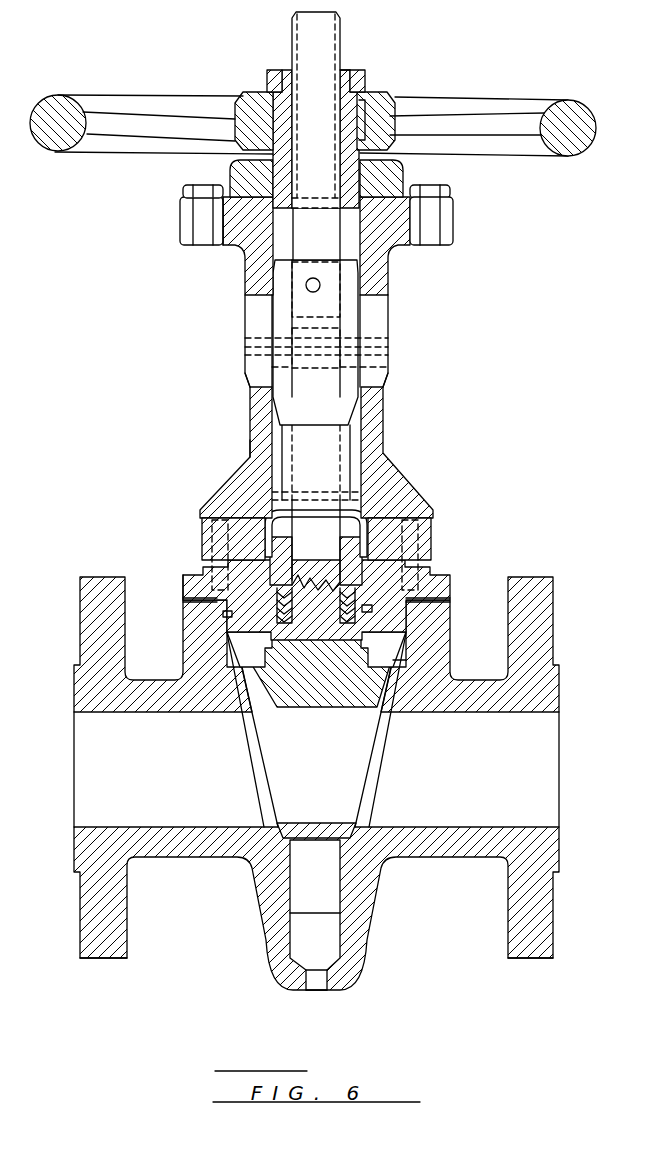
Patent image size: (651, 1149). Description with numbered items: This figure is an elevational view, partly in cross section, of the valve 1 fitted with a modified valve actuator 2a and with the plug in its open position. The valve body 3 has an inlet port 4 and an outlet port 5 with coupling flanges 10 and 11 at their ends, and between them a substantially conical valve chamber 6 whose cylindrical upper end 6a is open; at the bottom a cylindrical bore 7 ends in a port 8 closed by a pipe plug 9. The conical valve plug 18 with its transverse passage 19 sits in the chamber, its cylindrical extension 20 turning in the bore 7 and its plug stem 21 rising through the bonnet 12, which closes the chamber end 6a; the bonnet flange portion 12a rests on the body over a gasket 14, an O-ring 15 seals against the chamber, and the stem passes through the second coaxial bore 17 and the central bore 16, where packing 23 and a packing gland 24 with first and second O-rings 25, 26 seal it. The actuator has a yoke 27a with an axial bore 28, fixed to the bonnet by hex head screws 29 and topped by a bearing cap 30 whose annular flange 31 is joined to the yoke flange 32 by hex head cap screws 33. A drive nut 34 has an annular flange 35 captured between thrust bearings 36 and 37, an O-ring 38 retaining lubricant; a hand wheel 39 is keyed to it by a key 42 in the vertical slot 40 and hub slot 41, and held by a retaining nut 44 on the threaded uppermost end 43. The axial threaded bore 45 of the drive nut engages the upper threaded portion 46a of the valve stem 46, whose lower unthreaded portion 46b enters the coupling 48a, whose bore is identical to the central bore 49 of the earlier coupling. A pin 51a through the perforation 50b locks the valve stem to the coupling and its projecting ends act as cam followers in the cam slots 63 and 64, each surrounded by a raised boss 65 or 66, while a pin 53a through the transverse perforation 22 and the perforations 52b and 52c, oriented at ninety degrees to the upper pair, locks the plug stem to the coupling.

The valve 1 is at (563, 614).
The valve actuator 2a is at (247, 260).
The valve body 3 is at (455, 850).
The inlet port 4 is at (487, 717).
The outlet port 5 is at (122, 715).
The valve chamber 6 is at (383, 733).
The cylindrical upper end of valve chamber 6a is at (408, 656).
The cylindrical bore 7 is at (330, 930).
The port 8 is at (325, 988).
The pipe plug 9 is at (316, 990).
The coupling flange 10 is at (508, 950).
The coupling flange 11 is at (125, 958).
The bonnet 12 is at (395, 582).
The bonnet flange portion 12a is at (183, 582).
The gasket 14 is at (210, 600).
The O-ring 15 is at (225, 614).
The central bore 16 is at (357, 588).
The second coaxial bore 17 is at (337, 645).
The valve plug 18 is at (262, 697).
The transverse passage 19 is at (307, 713).
The cylindrical extension 20 is at (303, 889).
The plug stem 21 is at (303, 467).
The transverse perforation 22 is at (303, 340).
The packing 23 is at (380, 607).
The packing gland 24 is at (382, 518).
The first O-ring 25 is at (290, 558).
The second O-ring 26 is at (278, 578).
The yoke 27a is at (252, 412).
The axial bore 28 is at (270, 447).
The hex head screws 29 is at (218, 518).
The bearing cap 30 is at (233, 173).
The annular flange 31 is at (182, 213).
The flange 32 is at (187, 230).
The hex head cap screws 33 is at (187, 193).
The drive nut 34 is at (280, 110).
The annular flange 35 is at (400, 193).
The thrust bearing 36 is at (388, 173).
The thrust bearing 37 is at (390, 227).
The O-ring 38 is at (268, 168).
The hand wheel 39 is at (578, 116).
The vertical slot 40 is at (363, 122).
The slot 41 is at (362, 136).
The key 42 is at (362, 115).
The uppermost end of drive nut 43 is at (342, 72).
The retaining nut 44 is at (366, 72).
The axial threaded bore 45 is at (294, 79).
The valve stem 46 is at (305, 170).
The upper threaded portion 46a is at (302, 50).
The lower unthreaded portion 46b is at (302, 252).
The coupling 48a is at (358, 396).
The central bore 49 is at (343, 338).
The perforation 50b is at (322, 291).
The pin 51a is at (320, 287).
The perforation 52b is at (383, 377).
The perforation 52c is at (267, 367).
The pin 53a is at (360, 355).
The cam slot 63 is at (245, 307).
The cam slot 64 is at (388, 318).
The raised boss 65 is at (246, 385).
The raised boss 66 is at (381, 390).